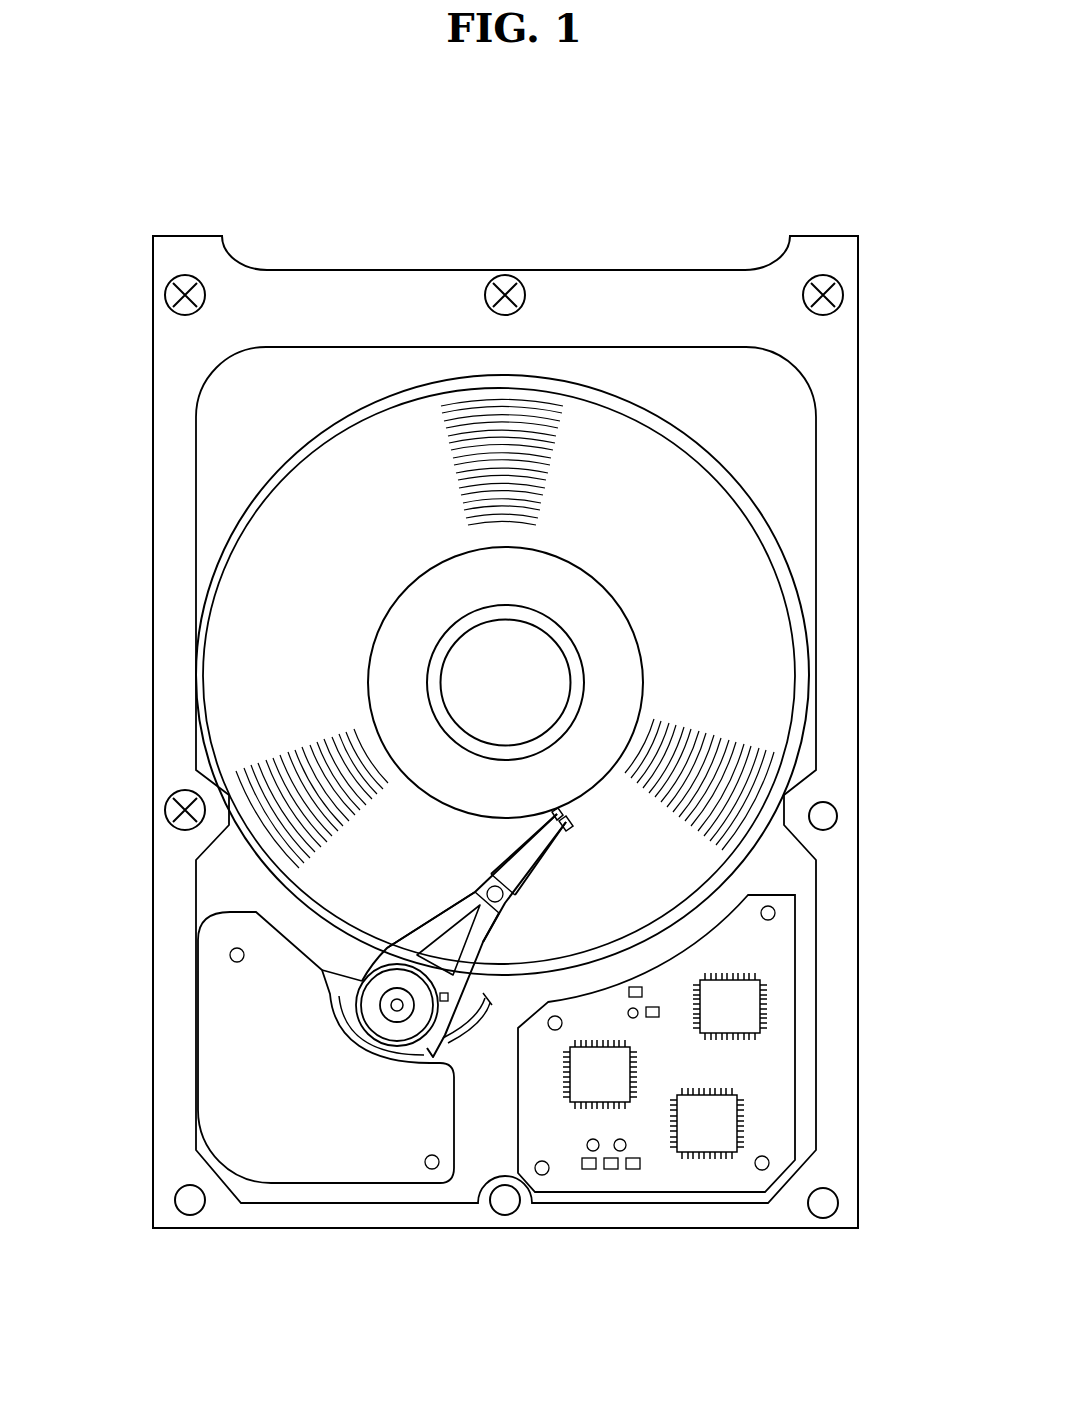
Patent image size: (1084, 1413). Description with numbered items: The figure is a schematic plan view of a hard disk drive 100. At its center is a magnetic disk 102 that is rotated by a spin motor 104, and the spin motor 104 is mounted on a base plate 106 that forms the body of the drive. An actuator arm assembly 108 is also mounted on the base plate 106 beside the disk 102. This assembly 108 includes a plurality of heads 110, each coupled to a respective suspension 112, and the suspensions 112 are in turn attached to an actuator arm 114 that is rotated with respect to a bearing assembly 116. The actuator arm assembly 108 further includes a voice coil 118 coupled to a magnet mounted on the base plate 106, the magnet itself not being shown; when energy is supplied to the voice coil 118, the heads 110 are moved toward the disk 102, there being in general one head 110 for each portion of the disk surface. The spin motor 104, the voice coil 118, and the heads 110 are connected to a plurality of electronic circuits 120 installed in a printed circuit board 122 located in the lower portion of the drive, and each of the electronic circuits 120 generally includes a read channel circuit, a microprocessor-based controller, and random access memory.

The hard disk drive 100 is at (660, 206).
The magnetic disk 102 is at (667, 588).
The spin motor 104 is at (383, 672).
The base plate 106 is at (213, 437).
The actuator arm assembly 108 is at (496, 927).
The head 110 is at (566, 830).
The suspension 112 is at (512, 866).
The actuator arm 114 is at (443, 920).
The bearing assembly 116 is at (420, 1018).
The voice coil 118 is at (309, 1143).
The electronic circuits 120 is at (748, 1013).
The printed circuit board 122 is at (785, 942).